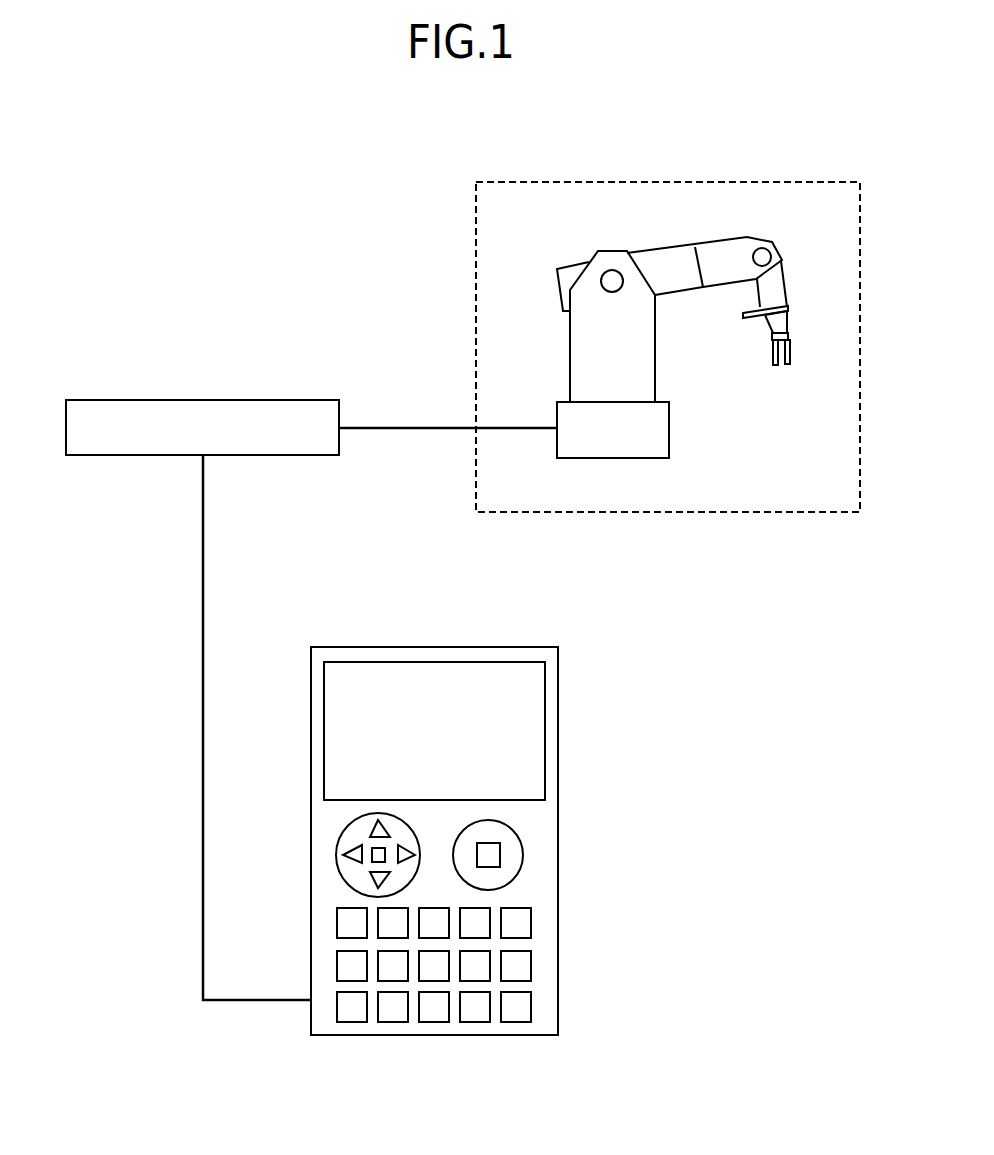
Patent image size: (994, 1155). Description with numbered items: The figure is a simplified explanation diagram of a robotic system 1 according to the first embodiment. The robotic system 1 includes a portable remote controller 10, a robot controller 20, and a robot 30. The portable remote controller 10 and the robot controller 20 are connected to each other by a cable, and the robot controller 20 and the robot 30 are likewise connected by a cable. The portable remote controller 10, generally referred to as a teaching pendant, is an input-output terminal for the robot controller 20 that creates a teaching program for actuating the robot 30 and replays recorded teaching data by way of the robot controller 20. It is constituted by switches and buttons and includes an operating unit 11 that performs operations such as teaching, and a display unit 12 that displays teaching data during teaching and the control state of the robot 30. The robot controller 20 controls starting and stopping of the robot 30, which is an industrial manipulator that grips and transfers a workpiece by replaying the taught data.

The robotic system 1 is at (195, 176).
The portable remote controller 10 is at (630, 747).
The operating unit 11 is at (540, 867).
The display unit 12 is at (533, 762).
The robot controller 20 is at (198, 400).
The robot 30 is at (683, 182).